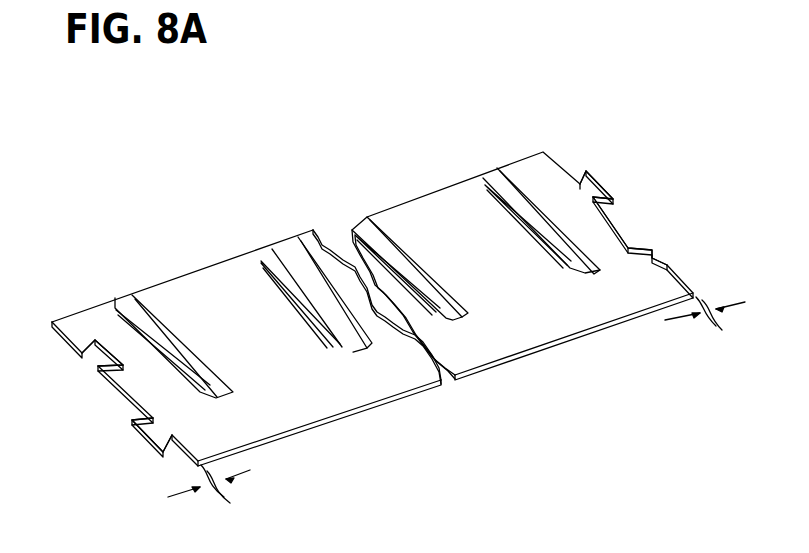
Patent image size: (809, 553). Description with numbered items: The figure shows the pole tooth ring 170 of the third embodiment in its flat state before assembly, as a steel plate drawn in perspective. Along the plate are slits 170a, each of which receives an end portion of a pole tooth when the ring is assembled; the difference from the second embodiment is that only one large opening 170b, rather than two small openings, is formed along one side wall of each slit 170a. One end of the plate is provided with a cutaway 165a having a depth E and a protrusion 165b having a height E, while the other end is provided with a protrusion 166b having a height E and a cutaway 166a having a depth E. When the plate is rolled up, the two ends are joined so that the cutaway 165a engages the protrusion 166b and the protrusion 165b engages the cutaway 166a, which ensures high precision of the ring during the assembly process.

The pole tooth ring 170 is at (346, 147).
The slit 170a is at (128, 299).
The large opening 170b is at (184, 381).
The cutaway 165a is at (98, 357).
The protrusion 165b is at (150, 437).
The cutaway 166a is at (655, 262).
The protrusion 166b is at (601, 185).
The depth/height of cutaways and protrusions E is at (226, 500).